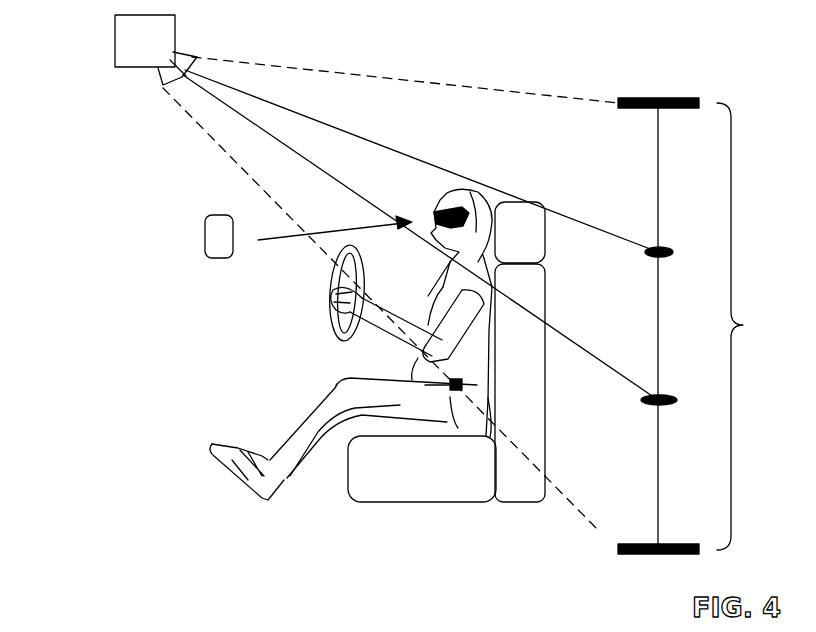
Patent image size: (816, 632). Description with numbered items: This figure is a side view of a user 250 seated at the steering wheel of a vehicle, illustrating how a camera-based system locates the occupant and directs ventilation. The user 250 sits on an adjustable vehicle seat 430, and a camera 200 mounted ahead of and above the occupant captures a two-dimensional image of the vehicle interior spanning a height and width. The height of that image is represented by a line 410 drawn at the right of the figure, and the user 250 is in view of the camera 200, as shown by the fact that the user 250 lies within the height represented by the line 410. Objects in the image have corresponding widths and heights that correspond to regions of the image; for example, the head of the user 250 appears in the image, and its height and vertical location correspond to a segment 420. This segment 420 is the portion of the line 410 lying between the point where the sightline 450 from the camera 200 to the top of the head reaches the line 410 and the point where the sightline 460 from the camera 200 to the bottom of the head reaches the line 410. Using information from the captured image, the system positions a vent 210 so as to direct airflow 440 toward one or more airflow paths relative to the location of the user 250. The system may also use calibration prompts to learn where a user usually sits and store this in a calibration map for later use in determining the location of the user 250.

The camera 200 is at (115, 42).
The vent 210 is at (197, 238).
The user 250 is at (465, 185).
The line representing image height 410 is at (710, 326).
The segment 420 is at (657, 318).
The adjustable vehicle seat 430 is at (442, 503).
The airflow 440 is at (292, 238).
The sightline to top of head 450 is at (595, 227).
The sightline to bottom of head 460 is at (602, 362).